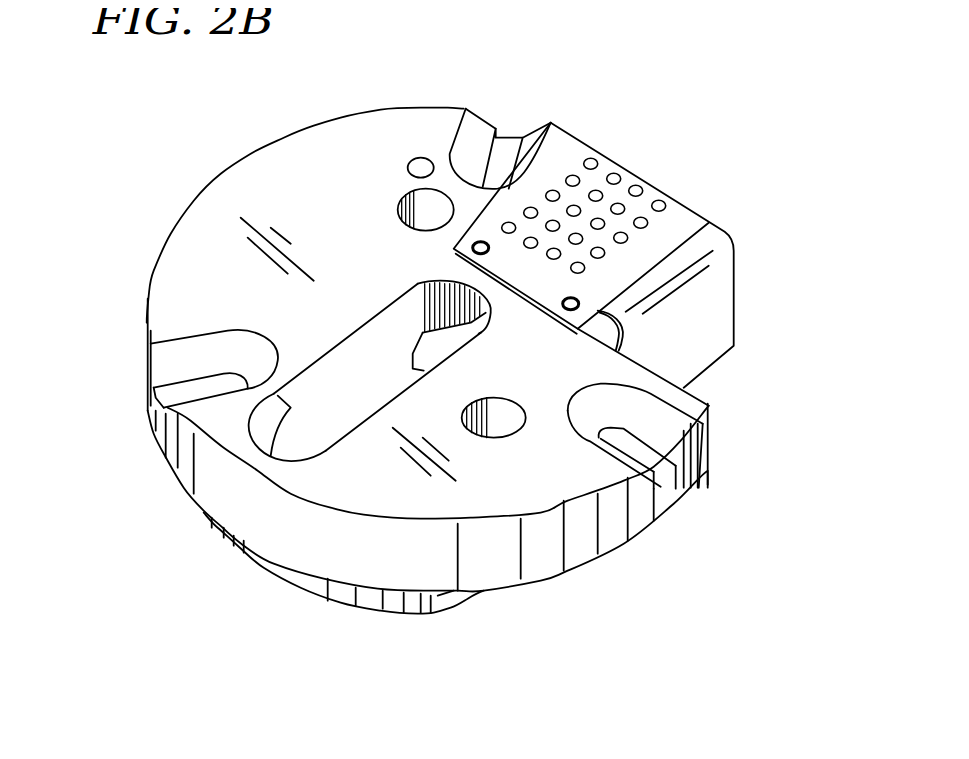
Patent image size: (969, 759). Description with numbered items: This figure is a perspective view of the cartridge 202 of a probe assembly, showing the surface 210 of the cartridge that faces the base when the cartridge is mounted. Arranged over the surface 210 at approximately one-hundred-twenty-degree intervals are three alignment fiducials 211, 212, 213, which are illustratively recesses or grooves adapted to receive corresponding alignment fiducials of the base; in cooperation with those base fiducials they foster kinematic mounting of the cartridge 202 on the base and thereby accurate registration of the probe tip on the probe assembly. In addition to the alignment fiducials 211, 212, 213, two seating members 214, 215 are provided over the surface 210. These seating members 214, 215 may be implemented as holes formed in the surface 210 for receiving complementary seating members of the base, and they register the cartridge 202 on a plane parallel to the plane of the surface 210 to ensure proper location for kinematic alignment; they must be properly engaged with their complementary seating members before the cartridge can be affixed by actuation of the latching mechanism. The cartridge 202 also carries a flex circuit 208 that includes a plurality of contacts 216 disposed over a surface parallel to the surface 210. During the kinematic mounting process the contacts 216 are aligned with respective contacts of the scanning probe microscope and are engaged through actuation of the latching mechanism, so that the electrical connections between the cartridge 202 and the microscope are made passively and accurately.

The cartridge 202 is at (103, 302).
The flex circuit 208 is at (720, 295).
The surface 210 is at (208, 233).
The alignment fiducial 211 is at (503, 157).
The alignment fiducial 212 is at (663, 428).
The alignment fiducial 213 is at (177, 365).
The seating member 214 is at (420, 210).
The seating member 215 is at (497, 425).
The contacts 216 is at (637, 190).